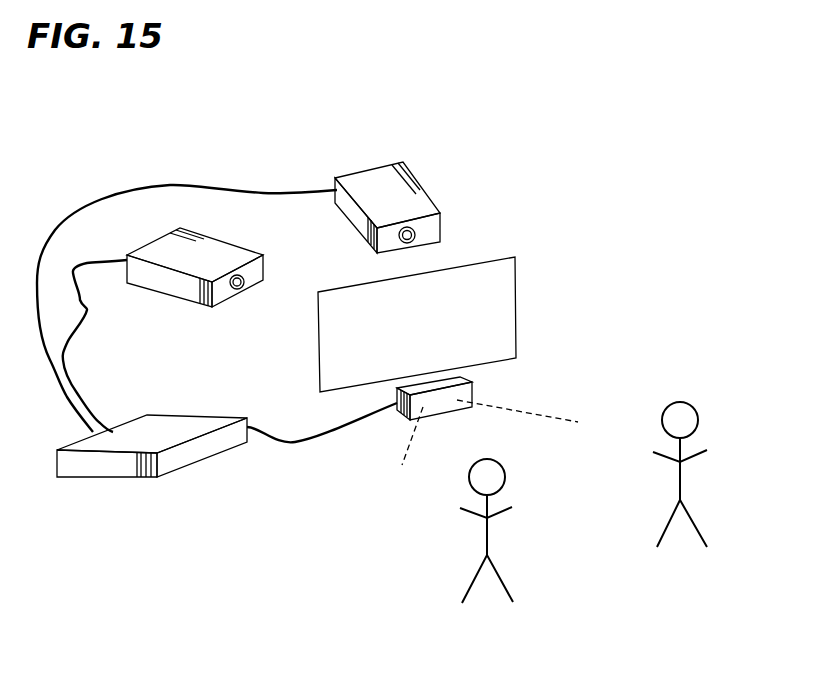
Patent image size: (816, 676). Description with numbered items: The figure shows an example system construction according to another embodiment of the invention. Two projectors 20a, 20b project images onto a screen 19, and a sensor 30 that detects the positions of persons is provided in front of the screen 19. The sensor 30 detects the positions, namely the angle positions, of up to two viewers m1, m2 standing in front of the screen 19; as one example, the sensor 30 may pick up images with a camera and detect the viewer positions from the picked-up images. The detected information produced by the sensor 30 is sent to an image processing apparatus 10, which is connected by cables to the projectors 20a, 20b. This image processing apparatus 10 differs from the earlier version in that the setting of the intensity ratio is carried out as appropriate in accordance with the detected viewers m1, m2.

The image processing apparatus 10 is at (98, 477).
The screen 19 is at (516, 300).
The projector 20a is at (423, 183).
The projector 20b is at (167, 298).
The sensor 30 is at (470, 383).
The viewer m1 is at (488, 538).
The viewer m2 is at (682, 482).